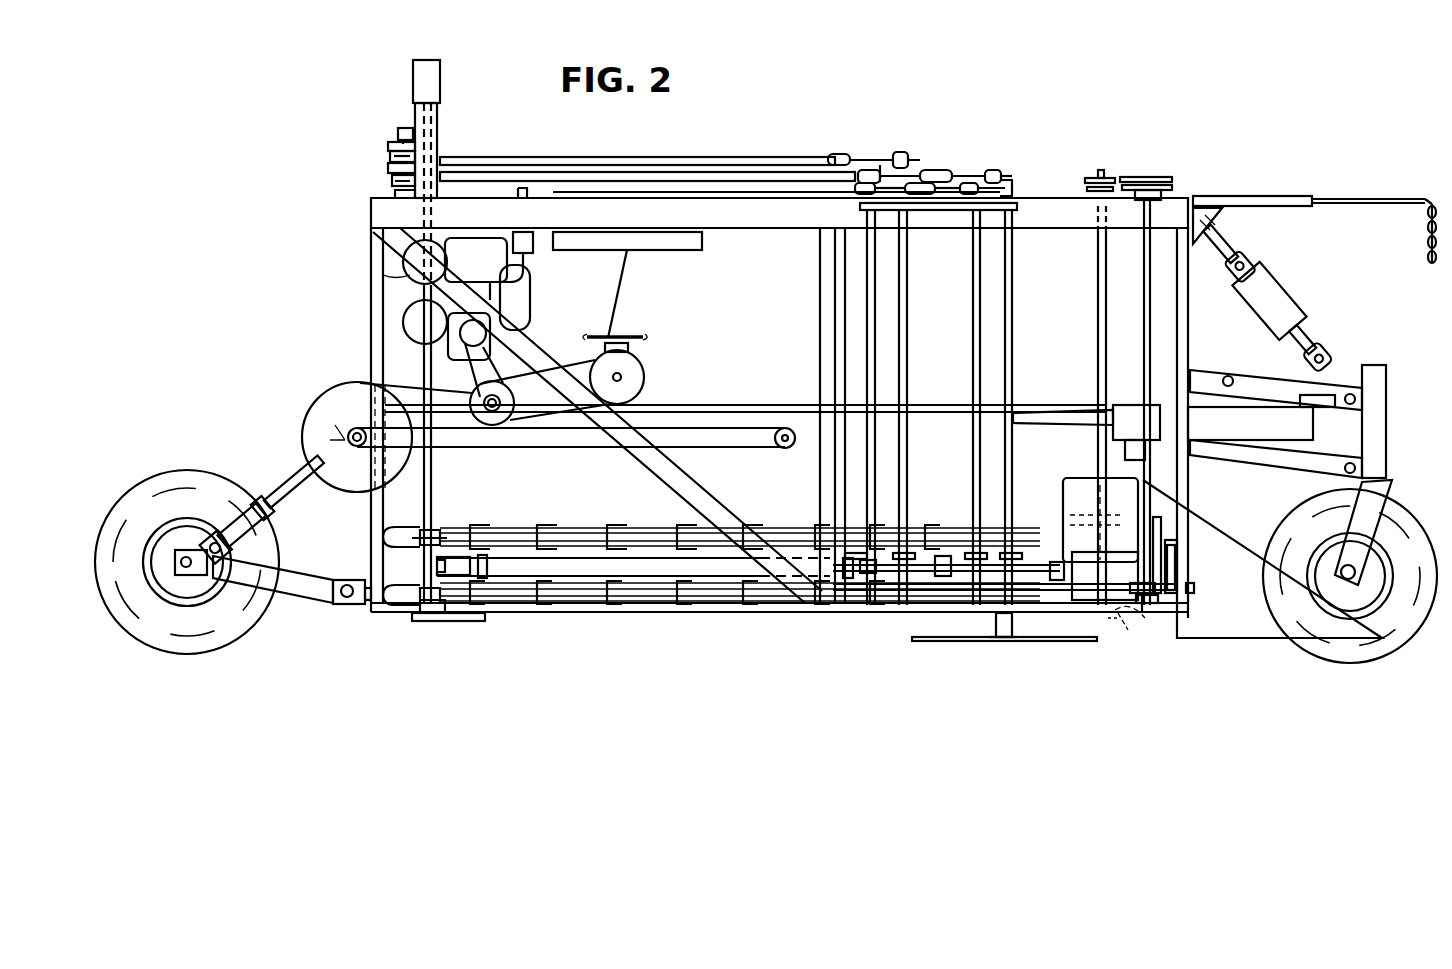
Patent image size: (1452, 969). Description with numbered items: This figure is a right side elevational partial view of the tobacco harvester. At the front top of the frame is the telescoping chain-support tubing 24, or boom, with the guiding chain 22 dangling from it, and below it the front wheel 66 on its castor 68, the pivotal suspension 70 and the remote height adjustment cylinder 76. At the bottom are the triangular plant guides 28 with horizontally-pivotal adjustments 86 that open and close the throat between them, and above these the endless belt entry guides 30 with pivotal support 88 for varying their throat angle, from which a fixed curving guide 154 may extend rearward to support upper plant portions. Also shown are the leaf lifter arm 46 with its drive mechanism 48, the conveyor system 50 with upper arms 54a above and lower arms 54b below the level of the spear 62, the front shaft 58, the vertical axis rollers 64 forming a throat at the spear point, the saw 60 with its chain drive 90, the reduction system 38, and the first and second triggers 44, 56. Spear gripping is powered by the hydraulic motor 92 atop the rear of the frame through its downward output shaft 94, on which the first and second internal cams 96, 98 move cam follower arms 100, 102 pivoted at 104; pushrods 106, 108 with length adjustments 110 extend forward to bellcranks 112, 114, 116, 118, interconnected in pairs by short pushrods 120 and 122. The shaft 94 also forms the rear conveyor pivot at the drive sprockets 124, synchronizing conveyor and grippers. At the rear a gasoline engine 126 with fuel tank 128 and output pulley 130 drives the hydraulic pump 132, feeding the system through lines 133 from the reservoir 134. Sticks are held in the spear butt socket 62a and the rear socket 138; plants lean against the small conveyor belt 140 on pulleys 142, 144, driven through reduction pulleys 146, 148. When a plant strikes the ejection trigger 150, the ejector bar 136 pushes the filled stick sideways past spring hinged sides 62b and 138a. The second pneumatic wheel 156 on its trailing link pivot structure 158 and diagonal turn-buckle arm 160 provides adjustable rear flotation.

The guiding chain 22 is at (1426, 244).
The telescoping chain-support tubing 24 is at (1243, 195).
The triangular plant guides 28 is at (1275, 635).
The endless belt entry guides 30 is at (1172, 408).
The reduction system 38 is at (1108, 170).
The first trigger 44 is at (1128, 628).
The leaf lifter arm 46 is at (1172, 600).
The drive mechanism 48 is at (1178, 563).
The conveyor system 50 is at (578, 510).
The upper conveyor arms 54a is at (605, 527).
The lower conveyor arms 54b is at (620, 598).
The second trigger 56 is at (1148, 610).
The front shaft 58 is at (1097, 320).
The saw 60 is at (948, 638).
The spear 62 is at (937, 572).
The upwardly open socket 62a is at (858, 572).
The spring hinged side 62b is at (845, 574).
The vertical axis rollers 64 is at (1030, 588).
The front wheel 66 is at (1392, 500).
The castor 68 is at (1408, 349).
The pivotal suspension 70 is at (1272, 375).
The remote height adjustment cylinder 76 is at (1279, 282).
The horizontally-pivotal adjustments 86 is at (1189, 590).
The pivotal support 88 is at (1130, 455).
The chain drive 90 is at (1052, 514).
The hydraulic motor 92 is at (411, 78).
The output shaft 94 is at (413, 112).
The first internal cam 96 is at (392, 147).
The second internal cam 98 is at (390, 176).
The cam follower arm 100 is at (390, 160).
The cam follower arm 102 is at (392, 183).
The pivot 104 is at (402, 127).
The pushrod 106 is at (479, 157).
The pushrod 108 is at (540, 174).
The length adjustments 110 is at (840, 158).
The bellcrank 112 is at (1003, 263).
The bellcrank 114 is at (970, 292).
The bellcrank 116 is at (905, 322).
The bellcrank 118 is at (873, 340).
The short pushrod 120 is at (960, 182).
The short pushrod 122 is at (965, 192).
The conveyor drive sprockets 124 is at (433, 530).
The gasoline engine 126 is at (516, 296).
The fuel tank 128 is at (384, 276).
The output pulley 130 is at (486, 330).
The hydraulic pump 132 is at (636, 361).
The hydraulic lines 133 is at (641, 334).
The hydraulic reservoir 134 is at (665, 250).
The ejector bar 136 is at (567, 568).
The second upwardly open socket 138 is at (455, 574).
The spring-hinged side 138a is at (450, 615).
The small conveyor belt 140 is at (646, 425).
The first pulley 142 is at (350, 425).
The second pulley 144 is at (800, 430).
The reduction system pulley 146 is at (500, 420).
The reduction system pulley 148 is at (343, 385).
The ejection trigger 150 is at (482, 613).
The fixed curving guide 154 is at (1015, 412).
The second pneumatic wheel 156 is at (178, 468).
The trailing link pivot structure 158 is at (298, 578).
The diagonal turn-buckle arm 160 is at (293, 478).